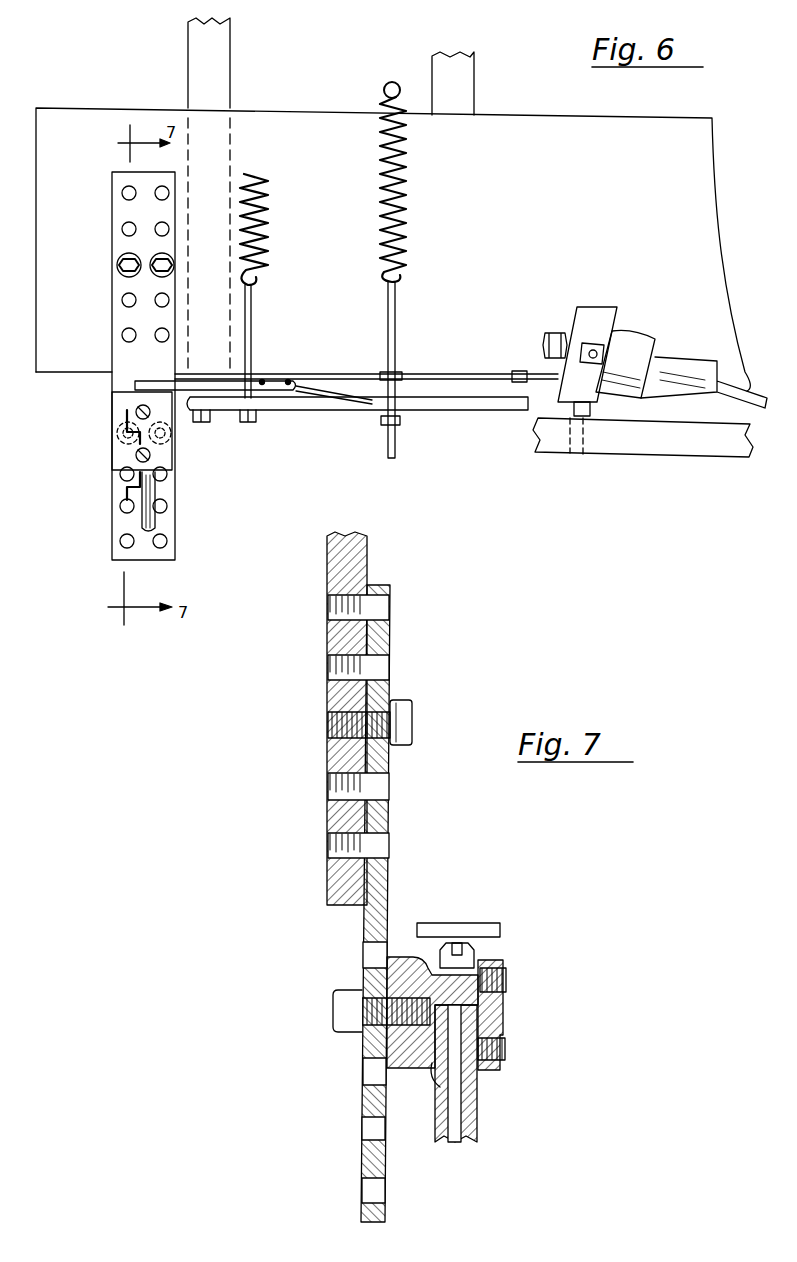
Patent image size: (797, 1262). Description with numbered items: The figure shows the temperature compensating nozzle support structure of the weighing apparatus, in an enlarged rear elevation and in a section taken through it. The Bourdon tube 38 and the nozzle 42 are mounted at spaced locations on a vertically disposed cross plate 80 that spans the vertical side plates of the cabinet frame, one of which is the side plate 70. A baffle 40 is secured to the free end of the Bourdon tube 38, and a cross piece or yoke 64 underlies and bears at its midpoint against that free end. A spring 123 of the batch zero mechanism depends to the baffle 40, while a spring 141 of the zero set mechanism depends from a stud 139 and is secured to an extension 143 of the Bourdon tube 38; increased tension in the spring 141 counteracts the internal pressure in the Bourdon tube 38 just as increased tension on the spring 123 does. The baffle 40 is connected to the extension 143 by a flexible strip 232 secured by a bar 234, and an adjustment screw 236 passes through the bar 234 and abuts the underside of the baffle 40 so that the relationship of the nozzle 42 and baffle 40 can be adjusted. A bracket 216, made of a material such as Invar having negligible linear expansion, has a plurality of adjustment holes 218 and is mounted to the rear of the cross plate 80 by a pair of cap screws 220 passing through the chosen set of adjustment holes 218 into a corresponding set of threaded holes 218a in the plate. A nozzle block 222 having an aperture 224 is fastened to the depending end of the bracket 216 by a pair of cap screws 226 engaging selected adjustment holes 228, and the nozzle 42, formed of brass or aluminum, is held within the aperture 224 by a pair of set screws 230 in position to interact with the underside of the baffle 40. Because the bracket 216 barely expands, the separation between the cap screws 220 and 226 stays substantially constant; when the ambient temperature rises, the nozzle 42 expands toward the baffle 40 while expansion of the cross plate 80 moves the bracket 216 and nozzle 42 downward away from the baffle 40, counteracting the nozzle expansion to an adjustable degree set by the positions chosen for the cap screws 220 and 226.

In FIG. 6, the Bourdon tube 38 is at (700, 375).
In FIG. 6, the baffle 40 is at (200, 385).
In FIG. 7, the baffle 40 is at (490, 922).
In FIG. 6, the nozzle 42 is at (158, 488).
In FIG. 7, the nozzle 42 is at (470, 1117).
In FIG. 6, the yoke 64 is at (683, 445).
In FIG. 6, the vertical side plate 70 is at (228, 42).
In FIG. 6, the cross plate 80 is at (92, 108).
In FIG. 7, the cross plate 80 is at (370, 548).
In FIG. 6, the spring 123 is at (272, 181).
In FIG. 6, the stud 139 is at (390, 83).
In FIG. 6, the spring 141 is at (408, 205).
In FIG. 6, the extension 143 is at (455, 383).
In FIG. 6, the bracket 216 is at (112, 322).
In FIG. 7, the bracket 216 is at (378, 880).
In FIG. 6, the adjustment holes 218 is at (122, 227).
In FIG. 7, the adjustment holes 218 is at (383, 667).
In FIG. 7, the threaded holes 218a is at (330, 667).
In FIG. 6, the cap screws 220 is at (150, 272).
In FIG. 7, the cap screws 220 is at (417, 705).
In FIG. 6, the nozzle block 222 is at (112, 448).
In FIG. 7, the nozzle block 222 is at (493, 1013).
In FIG. 6, the aperture 224 is at (117, 460).
In FIG. 7, the aperture 224 is at (440, 1070).
In FIG. 6, the cap screws 226 is at (117, 432).
In FIG. 7, the cap screws 226 is at (340, 1002).
In FIG. 6, the adjustment holes 228 is at (118, 540).
In FIG. 7, the adjustment holes 228 is at (370, 957).
In FIG. 6, the set screws 230 is at (140, 412).
In FIG. 7, the set screws 230 is at (507, 978).
In FIG. 6, the flexible strip 232 is at (310, 386).
In FIG. 6, the bar 234 is at (332, 407).
In FIG. 6, the adjustment screw 236 is at (217, 423).